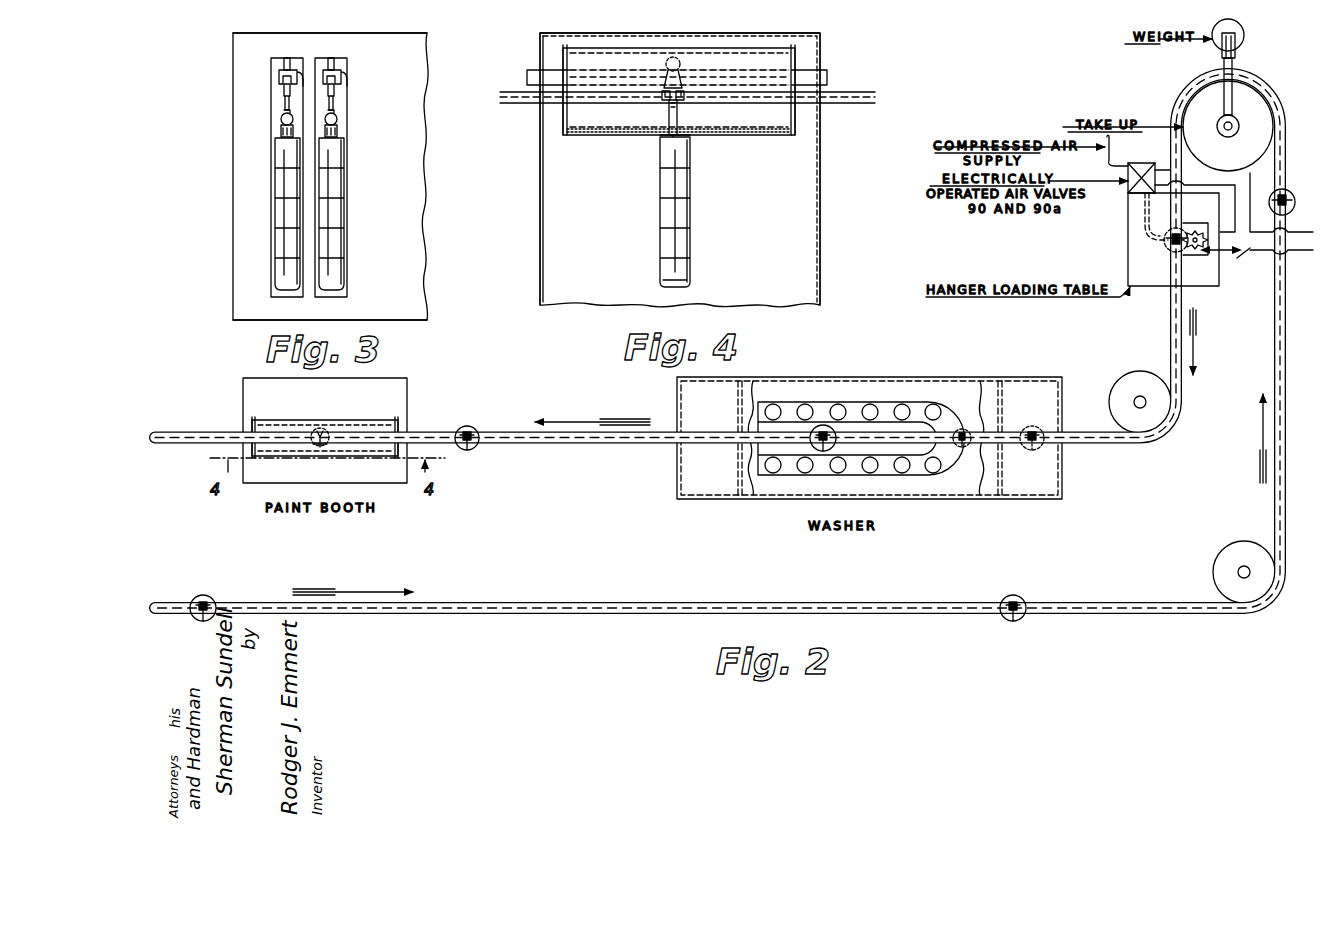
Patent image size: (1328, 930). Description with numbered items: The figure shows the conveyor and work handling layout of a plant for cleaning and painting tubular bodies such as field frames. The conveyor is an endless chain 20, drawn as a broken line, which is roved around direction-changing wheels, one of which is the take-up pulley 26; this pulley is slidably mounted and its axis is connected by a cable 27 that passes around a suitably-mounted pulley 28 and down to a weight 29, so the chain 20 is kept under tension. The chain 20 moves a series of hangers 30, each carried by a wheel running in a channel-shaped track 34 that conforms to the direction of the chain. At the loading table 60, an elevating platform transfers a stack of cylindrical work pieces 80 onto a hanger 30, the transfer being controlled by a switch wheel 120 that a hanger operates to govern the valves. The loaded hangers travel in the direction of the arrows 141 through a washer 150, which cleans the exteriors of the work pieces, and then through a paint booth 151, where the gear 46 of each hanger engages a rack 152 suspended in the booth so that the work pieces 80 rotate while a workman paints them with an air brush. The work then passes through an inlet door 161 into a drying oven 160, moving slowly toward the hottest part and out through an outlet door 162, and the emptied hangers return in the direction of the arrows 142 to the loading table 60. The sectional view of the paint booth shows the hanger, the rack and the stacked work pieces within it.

In FIG. 4, the endless chain 20 is at (508, 92).
In FIG. 2, the endless chain 20 is at (1170, 308).
In FIG. 2, the take-up pulley 26 is at (1252, 100).
In FIG. 2, the cable 27 is at (1234, 70).
In FIG. 2, the pulley 28 is at (1236, 42).
In FIG. 2, the weight 29 is at (1244, 35).
In FIG. 3, the hanger 30 is at (282, 117).
In FIG. 4, the hanger 30 is at (680, 80).
In FIG. 2, the hanger 30 is at (470, 449).
In FIG. 3, the track 34 is at (283, 76).
In FIG. 4, the track 34 is at (825, 72).
In FIG. 4, the gear 46 is at (662, 136).
In FIG. 2, the gear 46 is at (322, 432).
In FIG. 2, the loading table 60 is at (1128, 222).
In FIG. 3, the work piece 80 is at (277, 185).
In FIG. 4, the work piece 80 is at (690, 213).
In FIG. 2, the switch wheel 120 is at (1197, 231).
In FIG. 2, the arrows 141 is at (578, 416).
In FIG. 2, the arrows 142 is at (375, 586).
In FIG. 2, the washer 150 is at (942, 498).
In FIG. 4, the paint booth 151 is at (540, 40).
In FIG. 2, the paint booth 151 is at (400, 405).
In FIG. 4, the rack 152 is at (740, 135).
In FIG. 2, the rack 152 is at (278, 424).
In FIG. 3, the drying oven 160 is at (233, 67).
In FIG. 3, the inlet door 161 is at (338, 98).
In FIG. 3, the outlet door 162 is at (278, 97).